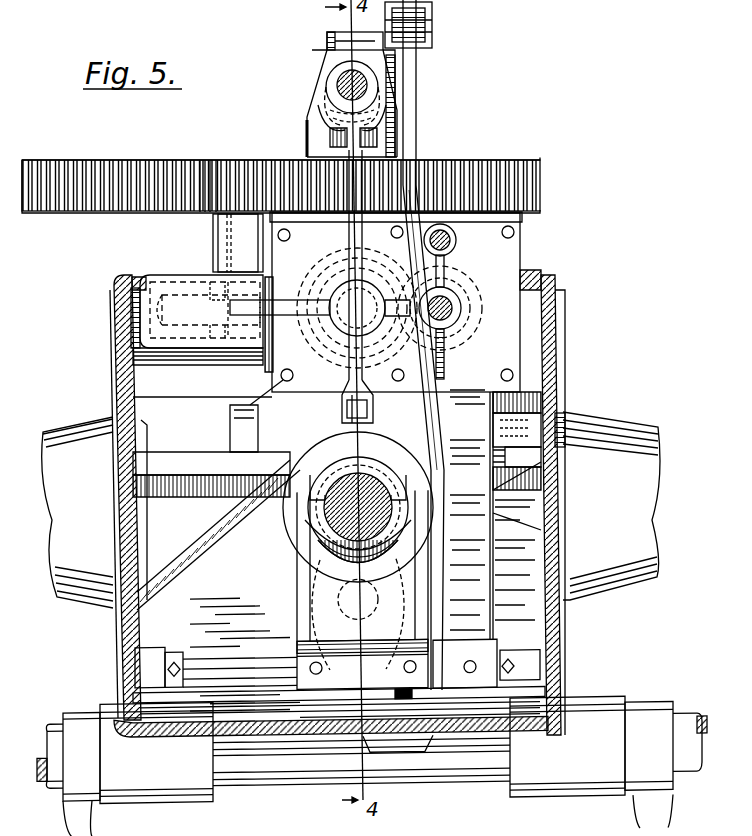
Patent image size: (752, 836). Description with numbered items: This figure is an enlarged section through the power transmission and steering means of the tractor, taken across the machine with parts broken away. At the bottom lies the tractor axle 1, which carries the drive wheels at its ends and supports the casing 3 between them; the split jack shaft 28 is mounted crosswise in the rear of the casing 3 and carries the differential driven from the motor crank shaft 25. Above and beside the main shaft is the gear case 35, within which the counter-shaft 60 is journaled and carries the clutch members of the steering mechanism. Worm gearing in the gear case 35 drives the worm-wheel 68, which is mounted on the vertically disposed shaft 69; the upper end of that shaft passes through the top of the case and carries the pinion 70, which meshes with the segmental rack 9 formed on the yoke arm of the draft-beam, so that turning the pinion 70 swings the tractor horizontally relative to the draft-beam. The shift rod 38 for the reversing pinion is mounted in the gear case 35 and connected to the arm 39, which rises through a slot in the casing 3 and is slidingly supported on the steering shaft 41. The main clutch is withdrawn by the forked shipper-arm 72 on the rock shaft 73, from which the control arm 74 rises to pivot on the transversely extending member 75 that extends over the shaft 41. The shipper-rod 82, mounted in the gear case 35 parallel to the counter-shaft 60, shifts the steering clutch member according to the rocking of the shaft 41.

The tractor axle 1 is at (690, 735).
The casing 3 is at (120, 373).
The segmental rack 9 is at (487, 172).
The crank shaft 25 is at (327, 527).
The split jack shaft 28 is at (245, 520).
The gear case 35 is at (478, 412).
The rod 38 is at (342, 402).
The arm 39 is at (335, 122).
The shaft 41 is at (338, 85).
The counter-shaft 60 is at (456, 304).
The worm-wheel 68 is at (191, 320).
The shaft 69 is at (214, 247).
The pinion 70 is at (218, 168).
The forked shipper-arm 72 is at (296, 594).
The rock shaft 73 is at (207, 670).
The control arm 74 is at (413, 116).
The transversely extending member 75 is at (327, 36).
The shipper-rod 82 is at (457, 240).